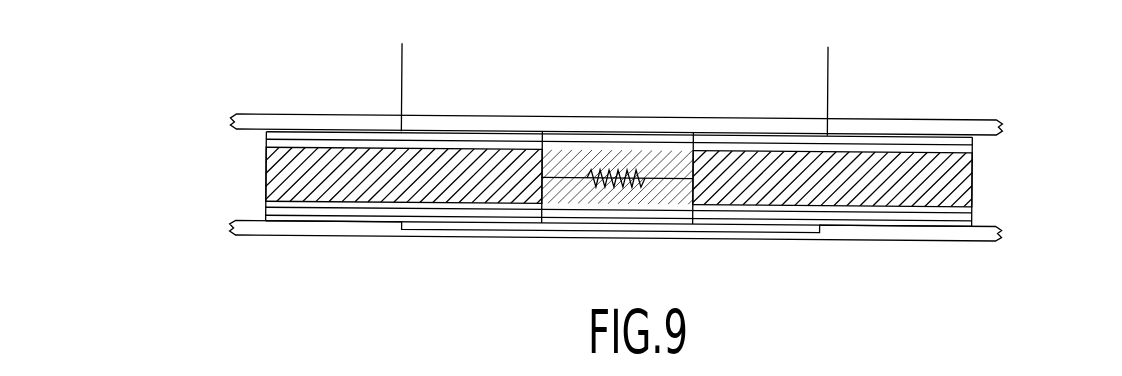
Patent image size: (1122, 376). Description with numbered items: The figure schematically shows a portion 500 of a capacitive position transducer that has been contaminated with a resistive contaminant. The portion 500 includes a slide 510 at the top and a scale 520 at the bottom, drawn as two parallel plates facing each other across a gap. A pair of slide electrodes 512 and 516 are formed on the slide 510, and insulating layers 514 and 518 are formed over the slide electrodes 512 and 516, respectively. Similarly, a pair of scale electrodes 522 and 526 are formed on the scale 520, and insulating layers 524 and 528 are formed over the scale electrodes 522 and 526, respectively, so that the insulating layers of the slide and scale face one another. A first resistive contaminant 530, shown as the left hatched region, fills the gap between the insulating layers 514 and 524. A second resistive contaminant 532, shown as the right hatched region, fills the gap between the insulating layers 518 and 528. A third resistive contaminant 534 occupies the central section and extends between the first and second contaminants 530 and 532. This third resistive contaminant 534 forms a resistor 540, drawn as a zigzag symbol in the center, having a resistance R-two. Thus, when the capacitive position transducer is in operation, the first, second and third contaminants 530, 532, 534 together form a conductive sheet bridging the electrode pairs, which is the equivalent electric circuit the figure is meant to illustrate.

The portion of the capacitive position transducer 500 is at (486, 90).
The slide 510 is at (318, 117).
The slide electrode 512 is at (460, 133).
The insulating layer 514 is at (537, 150).
The slide electrode 516 is at (728, 137).
The insulating layer 518 is at (797, 147).
The scale 520 is at (313, 238).
The scale electrode 522 is at (433, 214).
The insulating layer 524 is at (493, 208).
The scale electrode 526 is at (727, 217).
The insulating layer 528 is at (793, 206).
The first resistive contaminant 530 is at (285, 181).
The second resistive contaminant 532 is at (943, 180).
The third resistive contaminant 534 is at (650, 197).
The resistor 540 is at (614, 170).